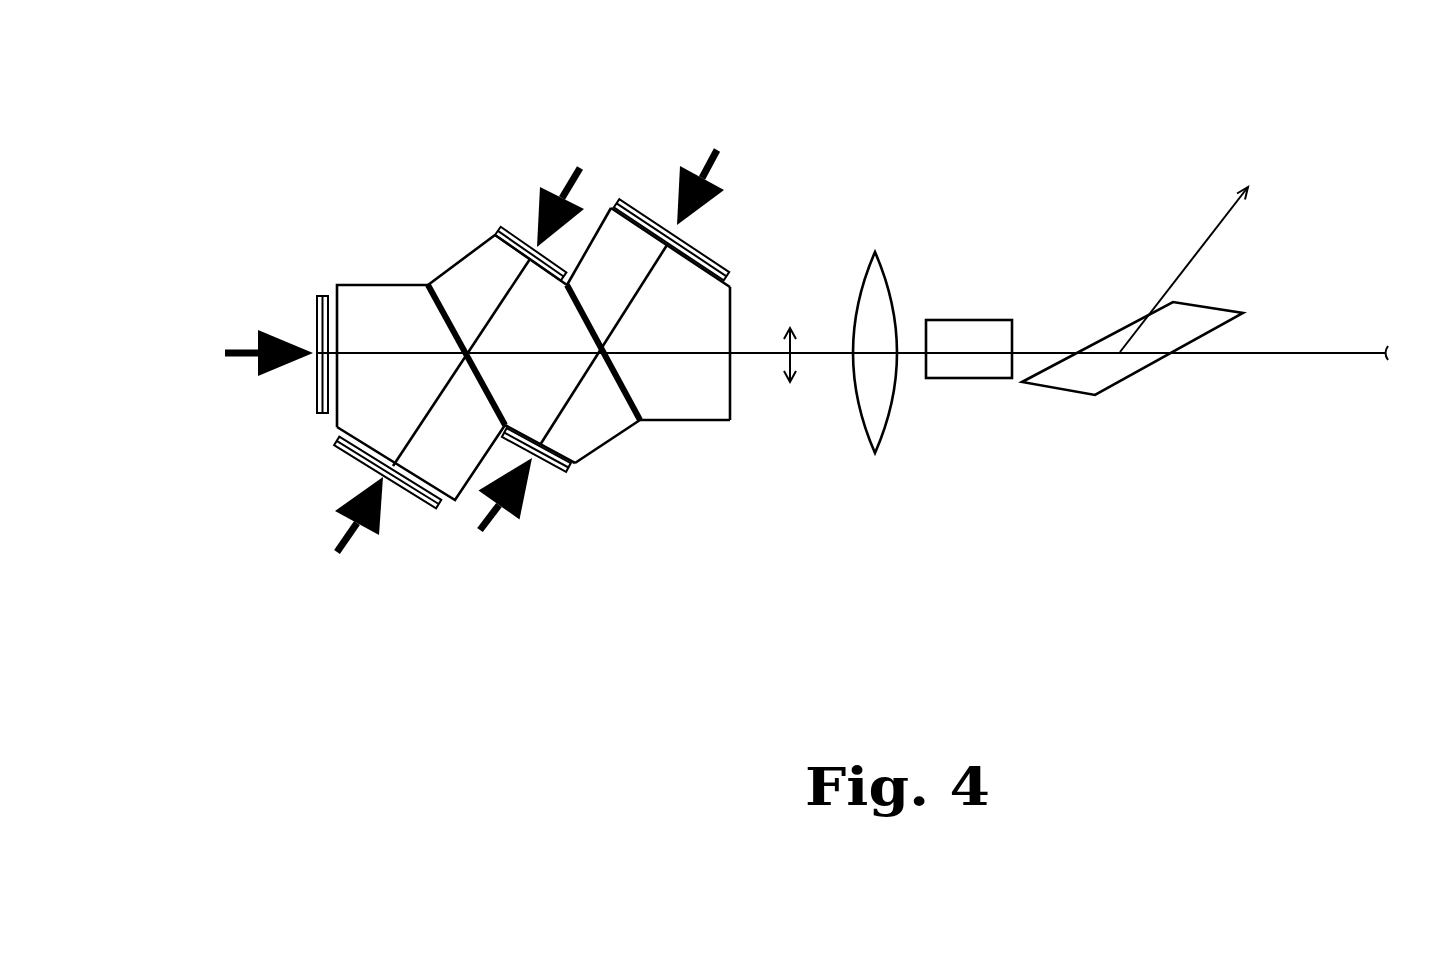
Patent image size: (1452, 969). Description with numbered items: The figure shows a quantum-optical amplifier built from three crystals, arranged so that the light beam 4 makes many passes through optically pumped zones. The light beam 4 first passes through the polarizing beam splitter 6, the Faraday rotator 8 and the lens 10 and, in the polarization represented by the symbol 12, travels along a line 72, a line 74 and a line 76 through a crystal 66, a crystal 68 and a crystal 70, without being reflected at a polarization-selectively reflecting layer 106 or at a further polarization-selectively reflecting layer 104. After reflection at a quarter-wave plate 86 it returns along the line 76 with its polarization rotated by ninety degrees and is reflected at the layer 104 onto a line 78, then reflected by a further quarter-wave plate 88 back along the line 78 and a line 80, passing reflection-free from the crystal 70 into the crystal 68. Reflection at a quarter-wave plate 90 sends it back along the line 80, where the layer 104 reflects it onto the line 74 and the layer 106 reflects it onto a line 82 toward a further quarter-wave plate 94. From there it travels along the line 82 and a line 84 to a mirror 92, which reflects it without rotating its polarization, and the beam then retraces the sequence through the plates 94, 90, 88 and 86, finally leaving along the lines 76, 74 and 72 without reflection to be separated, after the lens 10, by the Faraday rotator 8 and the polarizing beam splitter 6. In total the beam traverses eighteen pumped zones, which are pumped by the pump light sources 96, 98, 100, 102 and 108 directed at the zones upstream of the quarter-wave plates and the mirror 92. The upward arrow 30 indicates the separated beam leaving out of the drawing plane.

The light beam 4 is at (1310, 352).
The polarizing beam splitter 6 is at (1193, 323).
The Faraday rotator 8 is at (993, 343).
The lens 10 is at (873, 300).
The polarization symbol 12 is at (790, 330).
The output beam out of drawing plane 30 is at (1230, 217).
The crystal 66 is at (710, 401).
The crystal 68 is at (605, 431).
The crystal 70 is at (477, 446).
The line 72 is at (655, 352).
The line 74 is at (502, 353).
The line 76 is at (350, 353).
The line 78 is at (410, 443).
The line 80 is at (482, 333).
The line 82 is at (552, 423).
The line 84 is at (617, 313).
The quarter-wave plate 86 is at (322, 400).
The further quarter-wave plate 88 is at (427, 497).
The quarter-wave plate 90 is at (492, 235).
The mirror 92 is at (720, 260).
The further quarter-wave plate 94 is at (548, 467).
The pump light source 96 is at (226, 353).
The pump light source 98 is at (580, 168).
The pump light source 100 is at (717, 150).
The pump light source 102 is at (480, 530).
The polarization-selectively reflecting layer 104 is at (428, 283).
The polarization-selectively reflecting layer 106 is at (642, 425).
The pump light source 108 is at (337, 552).